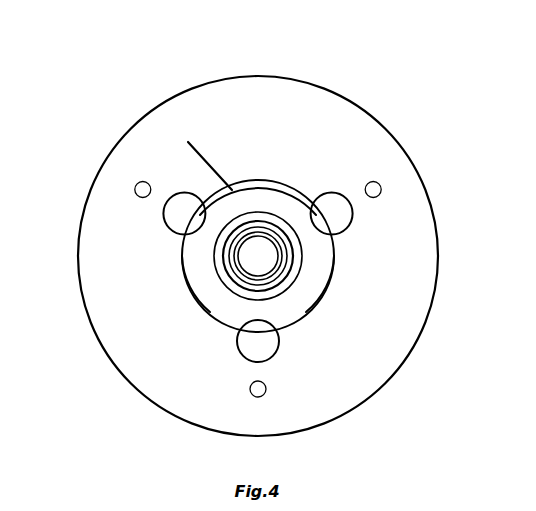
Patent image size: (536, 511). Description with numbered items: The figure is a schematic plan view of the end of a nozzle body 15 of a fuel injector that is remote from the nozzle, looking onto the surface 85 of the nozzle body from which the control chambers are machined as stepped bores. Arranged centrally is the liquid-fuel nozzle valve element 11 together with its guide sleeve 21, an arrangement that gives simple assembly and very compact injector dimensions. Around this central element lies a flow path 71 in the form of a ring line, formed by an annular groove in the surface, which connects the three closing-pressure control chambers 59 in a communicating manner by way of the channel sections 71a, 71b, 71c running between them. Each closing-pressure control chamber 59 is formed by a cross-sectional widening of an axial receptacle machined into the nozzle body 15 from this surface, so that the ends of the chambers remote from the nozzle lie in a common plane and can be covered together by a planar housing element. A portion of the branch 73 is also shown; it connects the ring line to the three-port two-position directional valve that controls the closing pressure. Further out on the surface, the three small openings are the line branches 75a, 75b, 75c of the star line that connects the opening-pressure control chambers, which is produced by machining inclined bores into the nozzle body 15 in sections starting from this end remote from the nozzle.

The nozzle body 15 is at (347, 117).
The surface of the nozzle body remote from the nozzle 85 is at (257, 127).
The branch 73 is at (206, 158).
The flow path 71 is at (217, 327).
The channel section 71a is at (198, 308).
The channel section 71b is at (267, 180).
The channel section 71c is at (318, 308).
The guide sleeve 21 is at (247, 230).
The liquid-fuel nozzle valve element 11 is at (258, 256).
The closing-pressure control chamber 59 is at (178, 223).
The line branch 75a is at (378, 185).
The line branch 75b is at (137, 185).
The line branch 75c is at (255, 397).